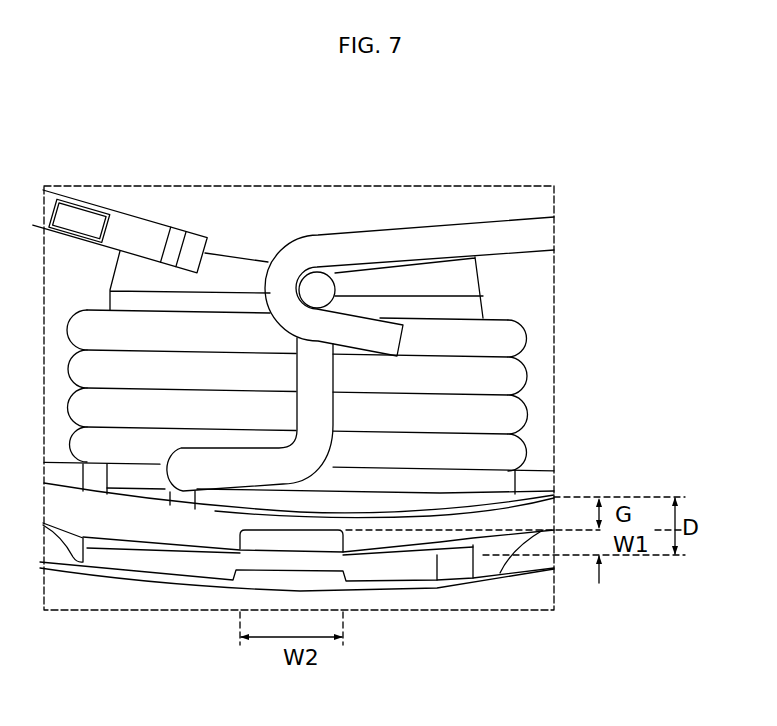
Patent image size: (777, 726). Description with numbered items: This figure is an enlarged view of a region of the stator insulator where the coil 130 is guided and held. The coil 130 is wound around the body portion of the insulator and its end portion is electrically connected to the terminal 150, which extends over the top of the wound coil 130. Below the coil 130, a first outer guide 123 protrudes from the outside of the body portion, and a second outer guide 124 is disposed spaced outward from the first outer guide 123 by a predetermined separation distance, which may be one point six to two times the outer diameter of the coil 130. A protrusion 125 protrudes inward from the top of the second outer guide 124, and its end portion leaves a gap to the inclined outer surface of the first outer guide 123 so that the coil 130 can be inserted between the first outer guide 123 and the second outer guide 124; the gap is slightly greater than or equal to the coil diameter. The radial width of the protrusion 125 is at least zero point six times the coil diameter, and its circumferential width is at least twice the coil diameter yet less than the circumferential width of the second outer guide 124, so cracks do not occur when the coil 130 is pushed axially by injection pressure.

The terminal 150 is at (450, 213).
The coil 130 is at (415, 520).
The first outer guide 123 is at (508, 487).
The protrusion 125 is at (240, 538).
The second outer guide 124 is at (390, 568).